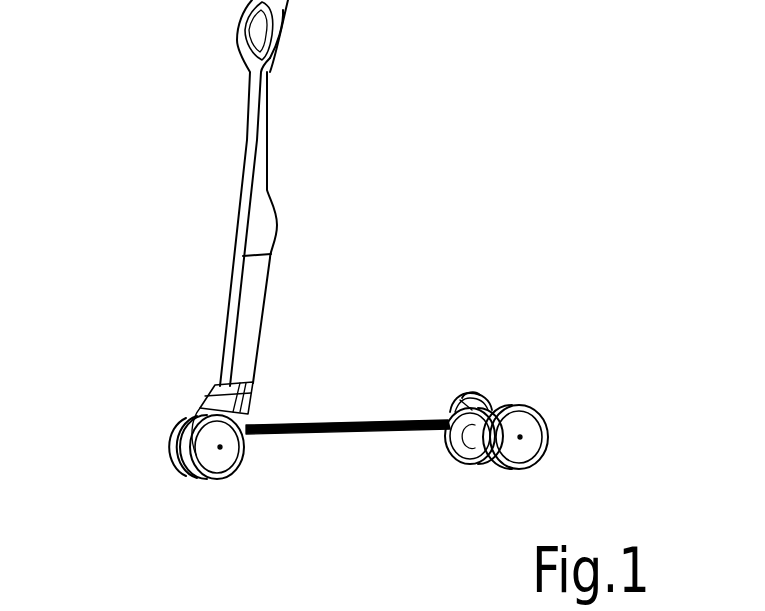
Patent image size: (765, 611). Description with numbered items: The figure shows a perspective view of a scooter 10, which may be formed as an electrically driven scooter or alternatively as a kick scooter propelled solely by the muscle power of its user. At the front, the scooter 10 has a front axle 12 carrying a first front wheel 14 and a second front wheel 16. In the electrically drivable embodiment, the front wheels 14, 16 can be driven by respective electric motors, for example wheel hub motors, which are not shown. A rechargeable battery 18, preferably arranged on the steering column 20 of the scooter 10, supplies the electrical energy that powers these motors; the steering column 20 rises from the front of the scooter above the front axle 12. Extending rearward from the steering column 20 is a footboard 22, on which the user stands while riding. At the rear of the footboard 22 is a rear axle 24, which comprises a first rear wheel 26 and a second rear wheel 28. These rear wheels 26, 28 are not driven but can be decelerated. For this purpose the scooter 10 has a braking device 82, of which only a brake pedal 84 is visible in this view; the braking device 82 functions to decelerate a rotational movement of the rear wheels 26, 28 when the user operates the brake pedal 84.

The scooter 10 is at (168, 100).
The front axle 12 is at (179, 389).
The first front wheel 14 is at (236, 460).
The second front wheel 16 is at (152, 445).
The rechargeable battery 18 is at (248, 326).
The steering column 20 is at (204, 253).
The footboard 22 is at (372, 397).
The rear axle 24 is at (514, 358).
The first rear wheel 26 is at (535, 437).
The second rear wheel 28 is at (458, 458).
The braking device 82 is at (470, 375).
The brake pedal 84 is at (464, 390).